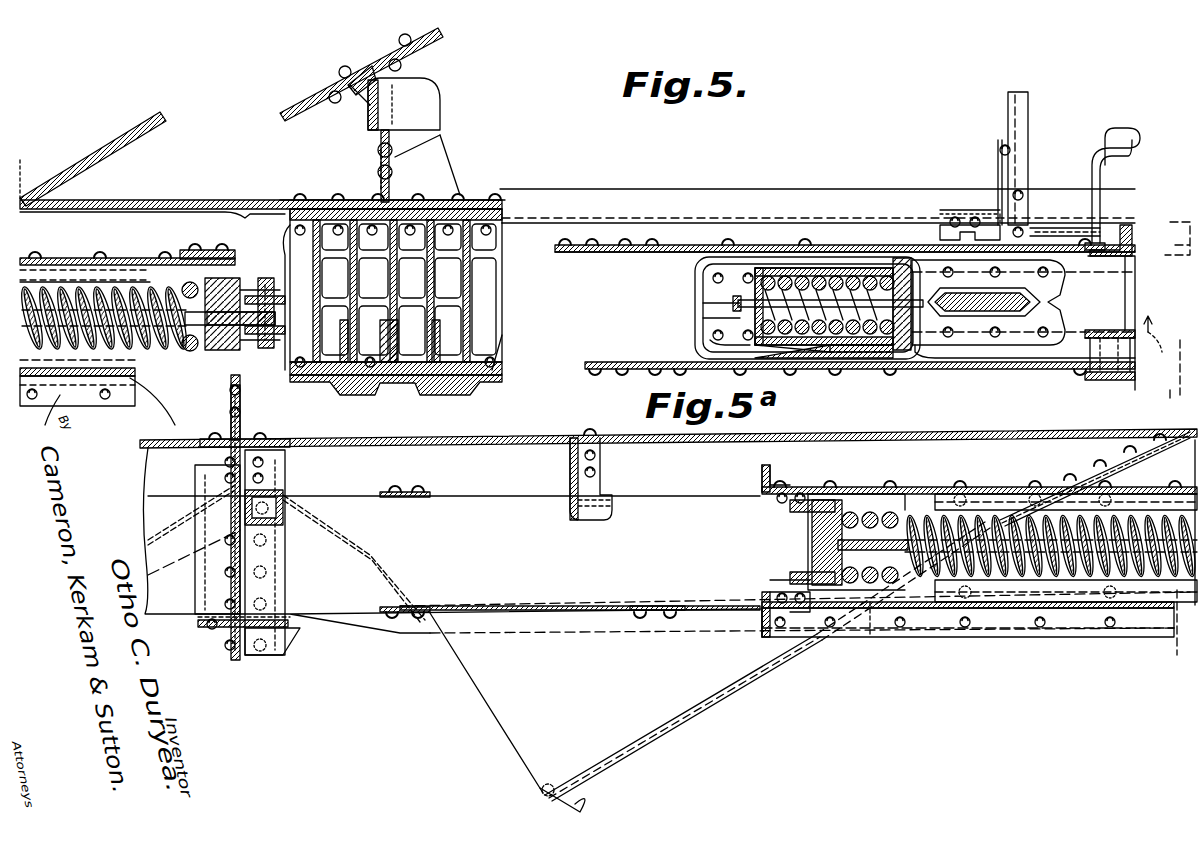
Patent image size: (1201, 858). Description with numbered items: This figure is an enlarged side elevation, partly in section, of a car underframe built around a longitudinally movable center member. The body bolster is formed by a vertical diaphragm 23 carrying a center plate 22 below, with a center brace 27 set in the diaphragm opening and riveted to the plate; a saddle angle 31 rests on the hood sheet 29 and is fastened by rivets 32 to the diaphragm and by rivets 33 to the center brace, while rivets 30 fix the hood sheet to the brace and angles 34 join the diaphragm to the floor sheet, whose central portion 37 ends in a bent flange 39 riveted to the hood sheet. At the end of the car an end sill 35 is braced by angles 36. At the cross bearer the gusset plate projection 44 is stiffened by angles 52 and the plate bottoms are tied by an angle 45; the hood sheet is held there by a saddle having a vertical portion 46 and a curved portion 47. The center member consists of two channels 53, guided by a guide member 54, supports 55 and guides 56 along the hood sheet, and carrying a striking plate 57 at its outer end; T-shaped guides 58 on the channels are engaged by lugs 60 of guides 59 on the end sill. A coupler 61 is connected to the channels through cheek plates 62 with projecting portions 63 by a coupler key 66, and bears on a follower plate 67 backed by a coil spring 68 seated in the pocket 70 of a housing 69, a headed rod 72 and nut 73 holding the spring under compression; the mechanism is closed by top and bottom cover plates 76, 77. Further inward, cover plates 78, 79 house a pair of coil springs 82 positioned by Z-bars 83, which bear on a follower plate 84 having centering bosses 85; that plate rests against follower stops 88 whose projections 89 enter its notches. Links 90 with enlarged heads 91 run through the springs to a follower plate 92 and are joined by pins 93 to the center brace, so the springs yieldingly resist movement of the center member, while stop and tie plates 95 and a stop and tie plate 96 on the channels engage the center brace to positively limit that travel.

In FIG. 5, the center plate 22 is at (440, 395).
In FIG. 5, the diaphragm 23 is at (410, 110).
In FIG. 5, the center brace 27 is at (490, 285).
In FIG. 5, the hood sheet 29 is at (185, 203).
In FIG. 5A, the hood sheet 29 is at (390, 440).
In FIG. 5, the rivets 30 is at (480, 200).
In FIG. 5, the saddle angle 31 is at (392, 160).
In FIG. 5, the rivets 32 is at (440, 135).
In FIG. 5, the rivets 33 is at (368, 185).
In FIG. 5, the angles 34 is at (410, 75).
In FIG. 5, the end sill 35 is at (985, 222).
In FIG. 5, the angles 36 is at (700, 195).
In FIG. 5, the central portion of floor sheet 37 is at (100, 160).
In FIG. 5, the bent flange 39 is at (1162, 318).
In FIG. 5A, the tongue-like projection 44 is at (265, 555).
In FIG. 5A, the angle 45 is at (222, 632).
In FIG. 5, the vertical portion of saddle 46 is at (245, 400).
In FIG. 5A, the vertical portion of saddle 46 is at (0, 0).
In FIG. 5, the curved portion of saddle 47 is at (270, 437).
In FIG. 5A, the curved portion of saddle 47 is at (0, 0).
In FIG. 5A, the angles 52 is at (218, 552).
In FIG. 5, the channels 53 is at (543, 273).
In FIG. 5A, the channels 53 is at (670, 626).
In FIG. 5A, the guide member 54 is at (275, 505).
In FIG. 5A, the supports 55 is at (280, 640).
In FIG. 5A, the guides 56 is at (600, 462).
In FIG. 5, the striking plate 57 is at (1130, 228).
In FIG. 5, the T-shaped guides 58 is at (1048, 235).
In FIG. 5, the guides 59 is at (1055, 222).
In FIG. 5, the lugs 60 is at (955, 232).
In FIG. 5, the coupler 61 is at (1127, 348).
In FIG. 5, the cheek plates 62 is at (690, 298).
In FIG. 5, the projecting portion 63 is at (945, 470).
In FIG. 5, the coupler key 66 is at (1000, 312).
In FIG. 5, the follower plate 67 is at (925, 355).
In FIG. 5, the coil spring 68 is at (820, 275).
In FIG. 5, the housing 69 is at (790, 268).
In FIG. 5, the pocket 70 is at (745, 362).
In FIG. 5, the headed rod 72 is at (705, 345).
In FIG. 5, the nut 73 is at (735, 302).
In FIG. 5, the top cover plate 76 is at (755, 254).
In FIG. 5, the bottom cover plate 77 is at (820, 369).
In FIG. 5, the top cover plate 78 is at (70, 258).
In FIG. 5A, the top cover plate 78 is at (1140, 494).
In FIG. 5, the bottom cover plate 79 is at (45, 410).
In FIG. 5A, the bottom cover plate 79 is at (1000, 608).
In FIG. 5, the coil springs 82 is at (185, 345).
In FIG. 5A, the coil springs 82 is at (900, 518).
In FIG. 5A, the Z-bars 83 is at (1045, 505).
In FIG. 5A, the follower plate 84 is at (805, 526).
In FIG. 5A, the spring centering bosses 85 is at (845, 525).
In FIG. 5A, the follower stops 88 is at (762, 500).
In FIG. 5A, the projections 89 is at (835, 622).
In FIG. 5, the links 90 is at (190, 285).
In FIG. 5A, the links 90 is at (872, 602).
In FIG. 5A, the enlarged heads 91 is at (822, 540).
In FIG. 5, the follower plate 92 is at (235, 280).
In FIG. 5, the pins 93 is at (268, 350).
In FIG. 5, the stop and tie plates 95 is at (580, 245).
In FIG. 5, the stop and tie plate 96 is at (210, 250).